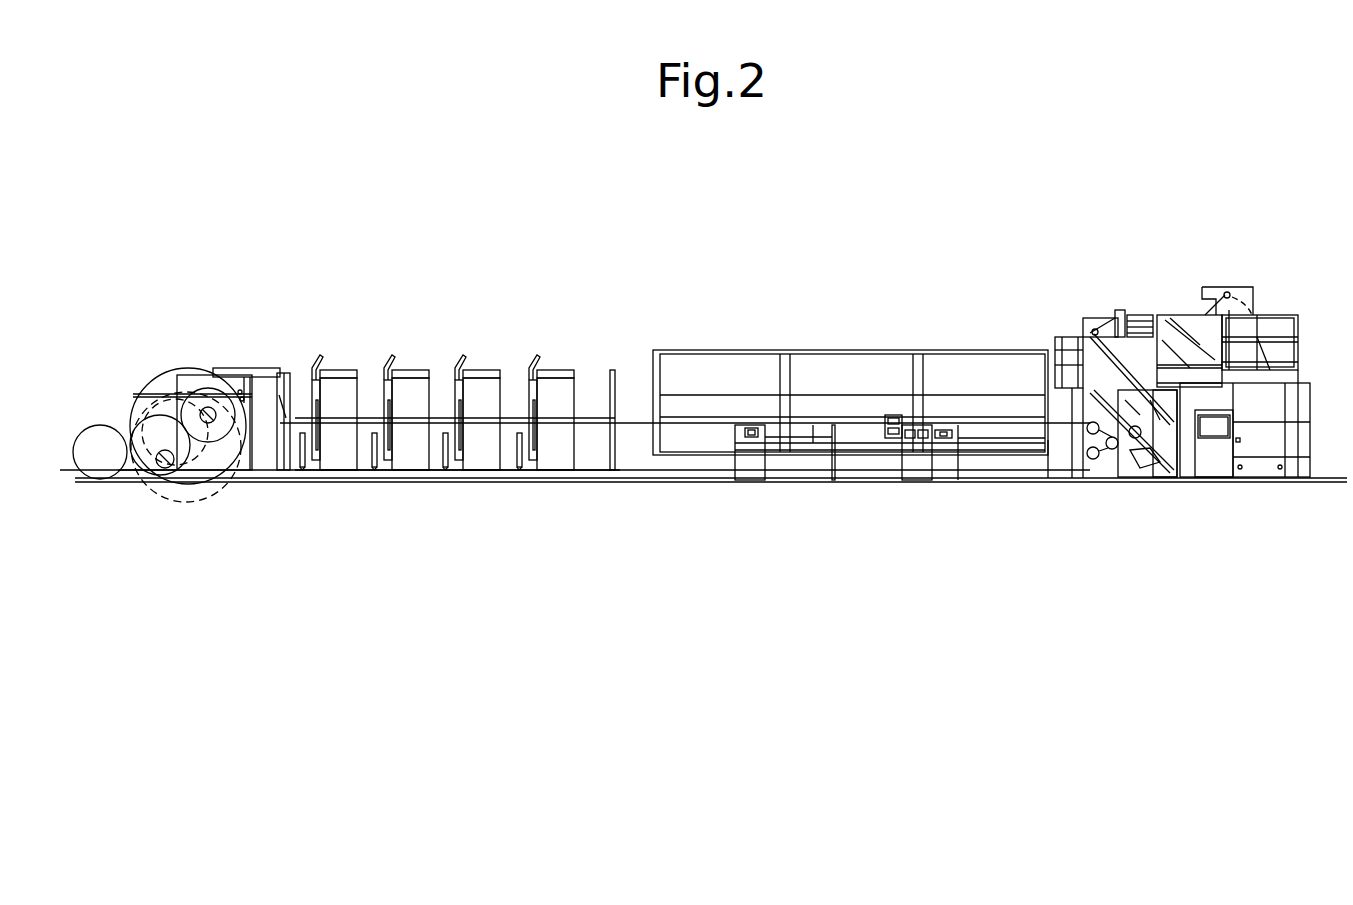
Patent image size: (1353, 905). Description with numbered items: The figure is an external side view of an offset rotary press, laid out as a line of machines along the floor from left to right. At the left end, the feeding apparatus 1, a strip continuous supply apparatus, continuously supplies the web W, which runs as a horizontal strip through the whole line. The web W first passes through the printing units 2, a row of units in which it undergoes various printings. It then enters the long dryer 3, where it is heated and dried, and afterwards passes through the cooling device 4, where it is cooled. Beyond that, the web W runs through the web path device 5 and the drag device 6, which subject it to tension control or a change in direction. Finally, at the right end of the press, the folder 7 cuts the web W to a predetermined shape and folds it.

The feeding apparatus 1 is at (232, 370).
The printing units 2 is at (413, 375).
The dryer 3 is at (743, 350).
The cooling device 4 is at (1110, 462).
The web path device 5 is at (1093, 318).
The drag device 6 is at (1240, 287).
The folder 7 is at (1275, 408).
The web W is at (638, 422).